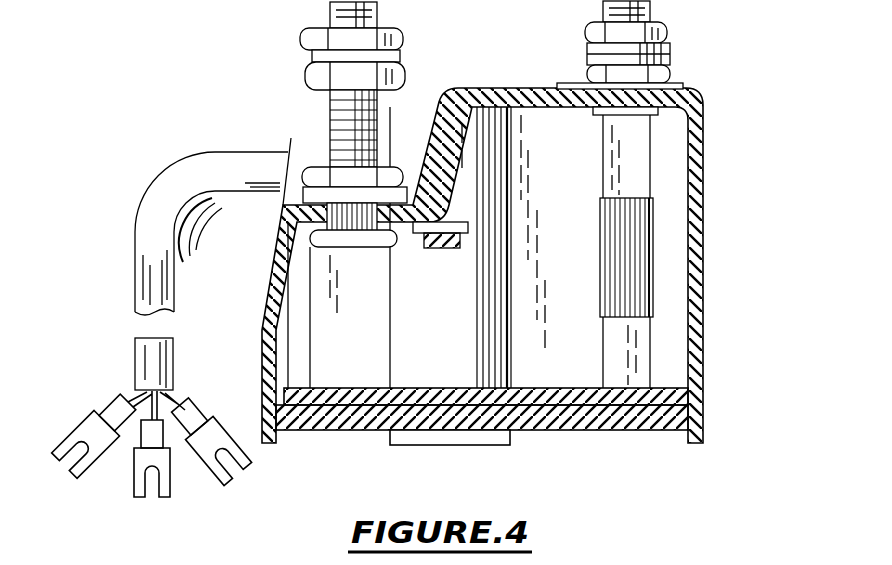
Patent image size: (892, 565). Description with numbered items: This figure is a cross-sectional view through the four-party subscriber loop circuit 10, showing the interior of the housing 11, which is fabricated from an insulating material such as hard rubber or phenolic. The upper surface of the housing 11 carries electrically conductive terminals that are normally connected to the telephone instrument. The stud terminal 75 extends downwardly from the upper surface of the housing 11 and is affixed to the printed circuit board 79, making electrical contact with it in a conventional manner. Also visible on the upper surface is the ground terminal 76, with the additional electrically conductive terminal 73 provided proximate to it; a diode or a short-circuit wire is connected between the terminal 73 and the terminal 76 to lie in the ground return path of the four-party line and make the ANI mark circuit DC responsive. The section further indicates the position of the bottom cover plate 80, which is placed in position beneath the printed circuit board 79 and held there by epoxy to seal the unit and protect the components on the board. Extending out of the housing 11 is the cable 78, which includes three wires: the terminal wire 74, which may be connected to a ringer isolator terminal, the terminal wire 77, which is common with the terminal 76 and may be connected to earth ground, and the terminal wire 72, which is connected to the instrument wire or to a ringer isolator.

The four-party subscriber loop circuit 10 is at (507, 236).
The housing 11 is at (690, 241).
The terminal wire 72 is at (233, 450).
The electrically conductive terminal 73 is at (343, 125).
The terminal wire 74 is at (99, 433).
The stud terminal 75 is at (655, 5).
The ground terminal 76 is at (340, 118).
The terminal wire 77 is at (140, 475).
The cable 78 is at (151, 212).
The printed circuit board 79 is at (660, 388).
The cover plate 80 is at (633, 418).